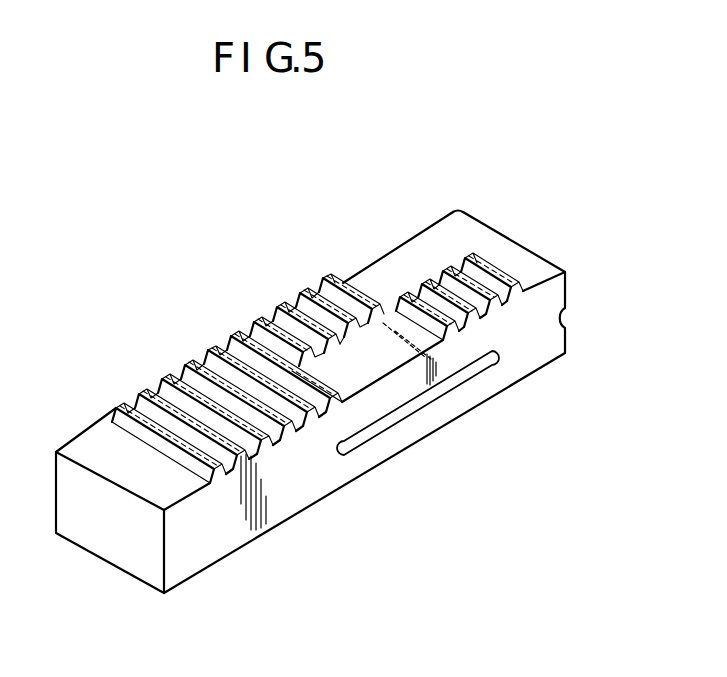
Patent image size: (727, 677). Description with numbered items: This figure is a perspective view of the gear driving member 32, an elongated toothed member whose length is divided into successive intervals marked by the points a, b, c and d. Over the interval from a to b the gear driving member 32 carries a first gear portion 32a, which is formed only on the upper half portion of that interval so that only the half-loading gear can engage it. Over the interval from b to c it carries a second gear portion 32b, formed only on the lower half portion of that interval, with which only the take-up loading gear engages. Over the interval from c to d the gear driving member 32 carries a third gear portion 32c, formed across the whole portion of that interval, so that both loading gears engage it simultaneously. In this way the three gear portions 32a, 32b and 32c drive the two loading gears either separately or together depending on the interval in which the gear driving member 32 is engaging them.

The gear driving member 32 is at (285, 532).
The first gear portion 32a is at (318, 264).
The second gear portion 32b is at (243, 335).
The third gear portion 32c is at (166, 389).
The interval point a is at (463, 255).
The interval point b is at (318, 271).
The interval point c is at (230, 333).
The interval point d is at (131, 411).